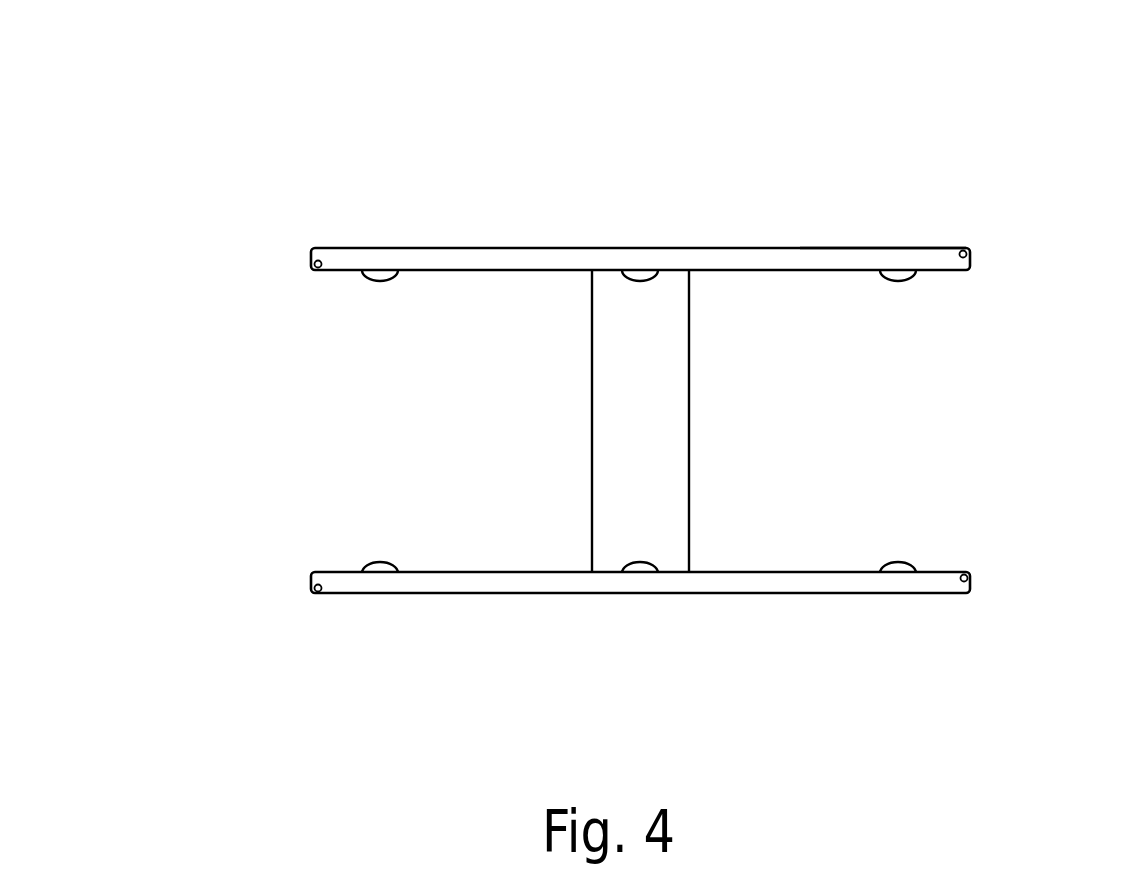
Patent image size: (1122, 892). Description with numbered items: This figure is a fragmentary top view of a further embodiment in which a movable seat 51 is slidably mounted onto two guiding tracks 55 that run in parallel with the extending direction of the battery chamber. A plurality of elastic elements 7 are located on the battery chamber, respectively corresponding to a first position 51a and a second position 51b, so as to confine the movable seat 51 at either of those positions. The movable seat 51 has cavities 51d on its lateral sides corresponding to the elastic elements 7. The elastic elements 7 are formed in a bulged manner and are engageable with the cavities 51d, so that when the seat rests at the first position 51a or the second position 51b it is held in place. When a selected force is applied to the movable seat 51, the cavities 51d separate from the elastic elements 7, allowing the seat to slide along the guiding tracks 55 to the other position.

The first position 51a is at (383, 222).
The second position 51b is at (897, 222).
The movable seat 51 is at (690, 422).
The cavity 51d is at (640, 282).
The guiding track 55 is at (641, 248).
The elastic element 7 is at (382, 282).